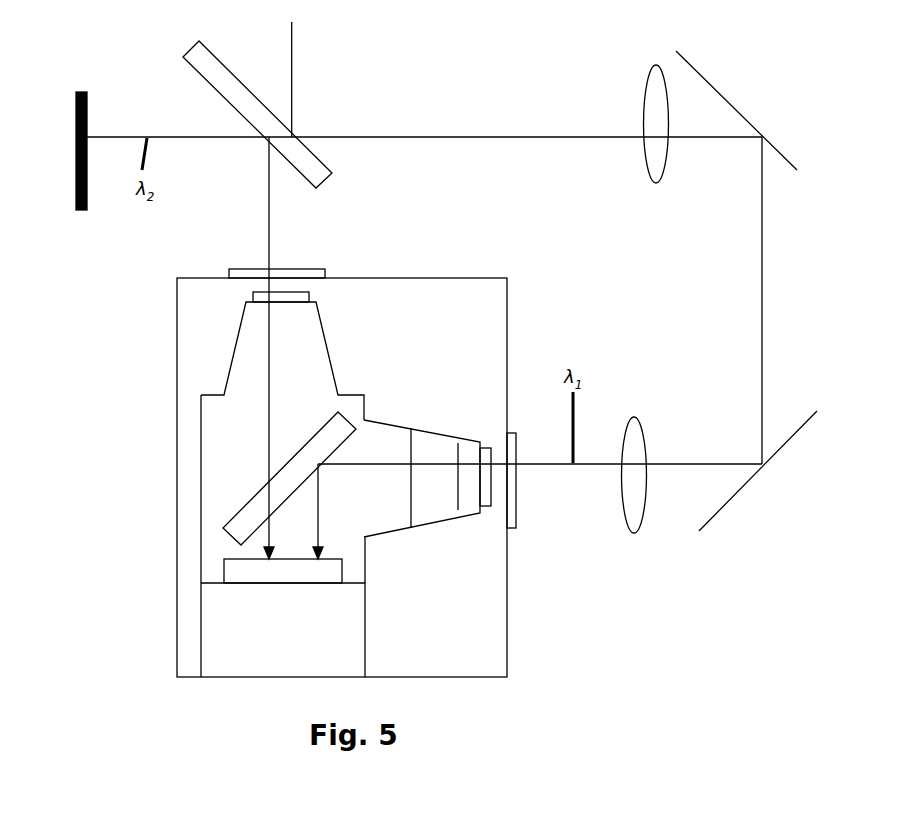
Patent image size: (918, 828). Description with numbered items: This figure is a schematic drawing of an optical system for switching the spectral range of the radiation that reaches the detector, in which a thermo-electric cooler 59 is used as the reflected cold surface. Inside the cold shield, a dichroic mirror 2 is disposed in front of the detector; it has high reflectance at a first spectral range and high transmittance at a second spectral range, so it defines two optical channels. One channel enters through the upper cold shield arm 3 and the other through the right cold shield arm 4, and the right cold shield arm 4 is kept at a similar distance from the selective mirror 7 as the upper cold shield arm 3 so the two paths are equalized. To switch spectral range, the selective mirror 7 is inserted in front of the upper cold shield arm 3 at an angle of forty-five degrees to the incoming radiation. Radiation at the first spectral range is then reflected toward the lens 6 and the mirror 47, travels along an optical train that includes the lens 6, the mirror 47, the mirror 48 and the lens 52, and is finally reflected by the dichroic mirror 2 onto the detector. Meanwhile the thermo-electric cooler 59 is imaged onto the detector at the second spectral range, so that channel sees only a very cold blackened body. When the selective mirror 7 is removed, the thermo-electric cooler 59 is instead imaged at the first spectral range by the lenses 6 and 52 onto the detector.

The dichroic mirror 2 is at (255, 493).
The upper cold shield arm 3 is at (383, 278).
The right cold shield arm 4 is at (437, 527).
The lens 6 is at (650, 172).
The selective mirror 7 is at (240, 93).
The mirror 47 is at (781, 152).
The mirror 48 is at (792, 438).
The lens 52 is at (642, 527).
The thermo-electric cooler 59 is at (77, 105).